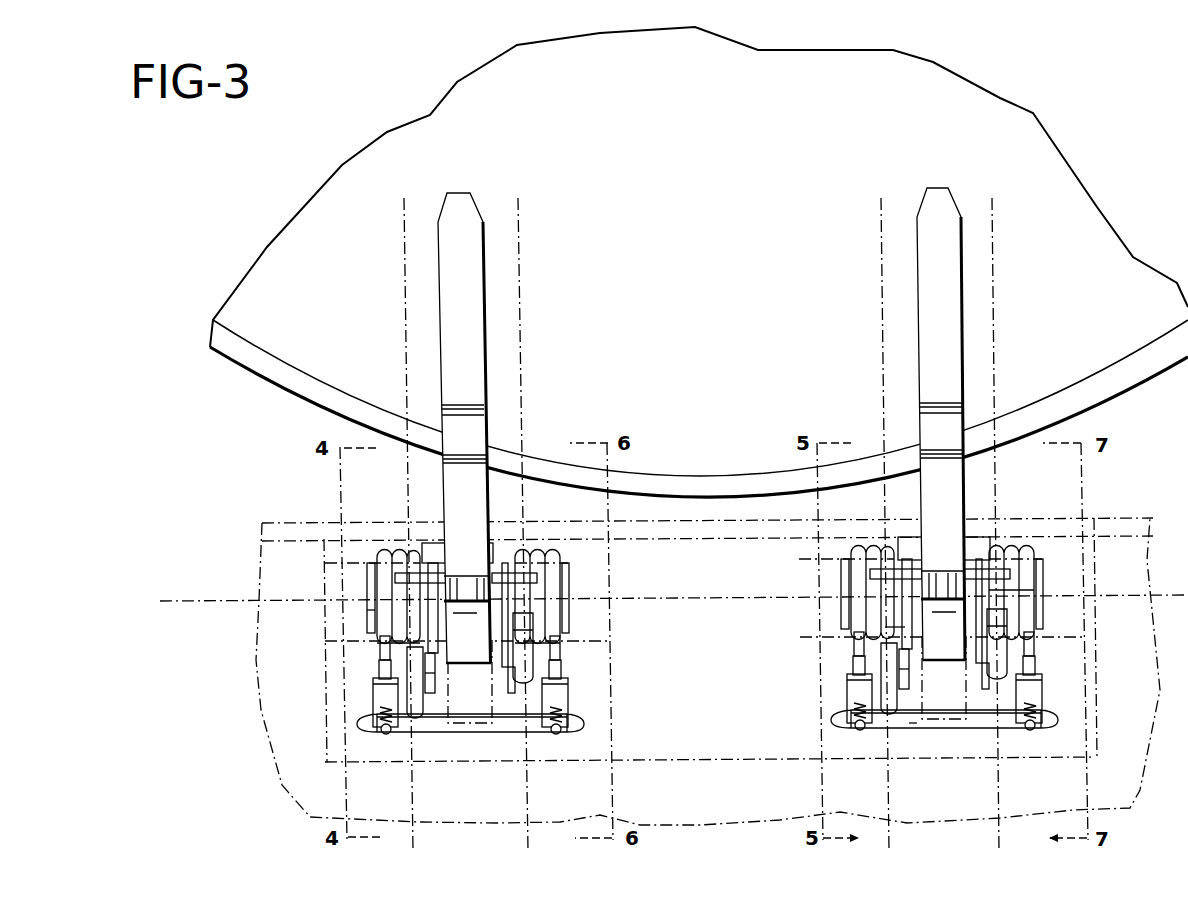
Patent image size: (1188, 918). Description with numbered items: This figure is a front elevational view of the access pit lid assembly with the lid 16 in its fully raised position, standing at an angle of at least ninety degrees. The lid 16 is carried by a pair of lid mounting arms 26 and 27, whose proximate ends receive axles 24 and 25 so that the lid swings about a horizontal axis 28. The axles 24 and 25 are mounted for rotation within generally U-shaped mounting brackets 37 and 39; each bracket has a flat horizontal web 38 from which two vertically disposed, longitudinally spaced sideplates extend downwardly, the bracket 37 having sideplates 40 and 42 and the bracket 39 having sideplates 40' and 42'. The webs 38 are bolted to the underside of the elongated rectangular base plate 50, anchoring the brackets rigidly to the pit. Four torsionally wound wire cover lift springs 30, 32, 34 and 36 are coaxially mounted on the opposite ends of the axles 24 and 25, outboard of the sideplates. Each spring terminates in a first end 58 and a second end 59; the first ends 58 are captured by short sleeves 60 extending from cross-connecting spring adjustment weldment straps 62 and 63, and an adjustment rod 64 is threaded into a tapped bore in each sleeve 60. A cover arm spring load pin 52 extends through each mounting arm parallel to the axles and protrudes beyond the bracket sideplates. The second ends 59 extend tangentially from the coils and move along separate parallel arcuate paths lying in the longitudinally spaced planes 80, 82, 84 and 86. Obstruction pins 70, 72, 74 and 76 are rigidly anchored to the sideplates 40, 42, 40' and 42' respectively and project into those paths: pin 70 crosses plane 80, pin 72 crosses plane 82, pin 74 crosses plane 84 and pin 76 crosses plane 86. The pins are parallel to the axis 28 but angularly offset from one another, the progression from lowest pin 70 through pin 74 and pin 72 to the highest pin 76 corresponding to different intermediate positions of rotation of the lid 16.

The lid 16 is at (1067, 197).
The axle 24 is at (572, 597).
The axle 25 is at (1046, 603).
The lid mounting arm 26 is at (487, 273).
The lid mounting arm 27 is at (918, 288).
The horizontal axis 28 is at (205, 598).
The cover lift spring 30 is at (378, 592).
The cover lift spring 32 is at (556, 590).
The cover lift spring 34 is at (1040, 556).
The cover lift spring 36 is at (860, 587).
The U-shaped mounting bracket 37 is at (433, 673).
The web 38 is at (435, 543).
The U-shaped mounting bracket 39 is at (980, 666).
The sideplate 40 is at (329, 617).
The sideplate 40' is at (929, 756).
The sideplate 42 is at (470, 701).
The sideplate 42' is at (1009, 661).
The base plate 50 is at (286, 521).
The cover arm spring load pin 52 is at (415, 558).
The first end 58 is at (378, 660).
The second end 59 is at (372, 686).
The sleeve 60 is at (376, 705).
The spring adjustment weldment strap 62 is at (433, 722).
The spring adjustment weldment strap 63 is at (987, 722).
The adjustment rod 64 is at (388, 735).
The obstruction pin 70 is at (378, 641).
The obstruction pin 72 is at (566, 634).
The obstruction pin 74 is at (887, 627).
The obstruction pin 76 is at (1003, 590).
The plane 80 is at (403, 279).
The plane 82 is at (522, 348).
The plane 84 is at (882, 349).
The plane 86 is at (995, 308).